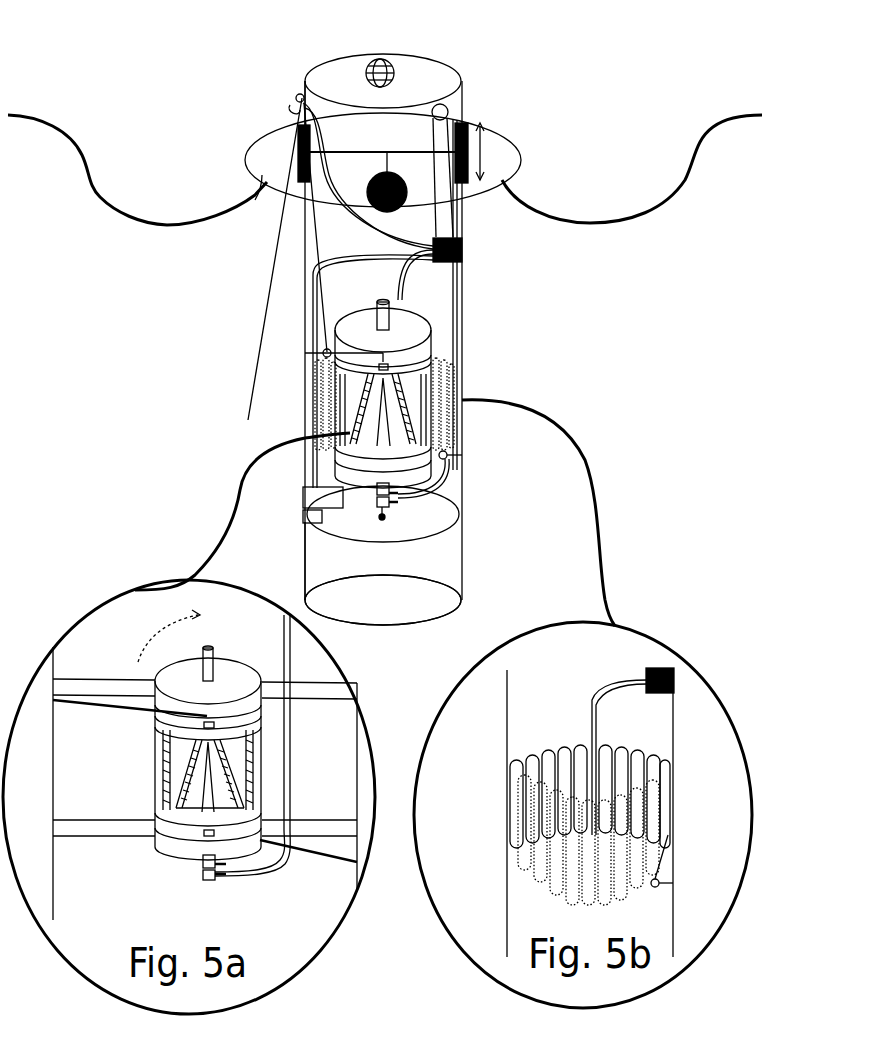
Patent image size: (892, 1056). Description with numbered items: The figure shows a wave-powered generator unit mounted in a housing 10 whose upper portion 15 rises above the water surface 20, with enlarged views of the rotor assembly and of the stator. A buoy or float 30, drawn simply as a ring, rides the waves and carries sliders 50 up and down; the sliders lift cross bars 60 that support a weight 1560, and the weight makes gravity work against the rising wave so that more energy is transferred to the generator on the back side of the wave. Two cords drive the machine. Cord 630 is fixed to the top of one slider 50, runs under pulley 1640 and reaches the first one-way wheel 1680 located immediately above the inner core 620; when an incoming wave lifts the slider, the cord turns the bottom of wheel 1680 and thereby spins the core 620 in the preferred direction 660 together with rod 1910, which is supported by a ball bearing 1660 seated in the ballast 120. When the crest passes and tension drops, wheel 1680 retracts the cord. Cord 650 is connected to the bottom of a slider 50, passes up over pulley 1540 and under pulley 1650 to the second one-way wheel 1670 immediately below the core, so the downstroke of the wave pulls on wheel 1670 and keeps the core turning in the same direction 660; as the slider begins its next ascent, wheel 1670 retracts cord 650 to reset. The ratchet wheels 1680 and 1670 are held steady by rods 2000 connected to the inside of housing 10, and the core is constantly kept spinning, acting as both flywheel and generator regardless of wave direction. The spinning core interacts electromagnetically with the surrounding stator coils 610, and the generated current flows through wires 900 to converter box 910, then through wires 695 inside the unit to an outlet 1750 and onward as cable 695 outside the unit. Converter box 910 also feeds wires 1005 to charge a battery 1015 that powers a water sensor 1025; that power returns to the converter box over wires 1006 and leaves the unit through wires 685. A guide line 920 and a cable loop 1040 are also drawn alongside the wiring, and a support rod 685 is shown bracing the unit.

In FIG. 5, the housing 10 is at (462, 310).
In FIG. 5A, the housing 10 is at (53, 752).
In FIG. 5, the upper tube section 15 is at (425, 80).
In FIG. 5, the water surface 20 is at (580, 222).
In FIG. 5, the buoy or float 30 is at (262, 180).
In FIG. 5, the slider 50 is at (262, 152).
In FIG. 5, the cross bar 60 is at (415, 152).
In FIG. 5, the ballast 120 is at (462, 585).
In FIG. 5, the coils 610 is at (455, 420).
In FIG. 5B, the coils 610 is at (518, 770).
In FIG. 5, the inner core 620 is at (335, 430).
In FIG. 5A, the inner core 620 is at (240, 735).
In FIG. 5, the cord 630 is at (322, 345).
In FIG. 5A, the cord 630 is at (140, 718).
In FIG. 5, the cord 650 is at (462, 240).
In FIG. 5A, the cord 650 is at (300, 855).
In FIG. 5A, the preferred direction 660 is at (158, 640).
In FIG. 5, the wires 685 is at (278, 220).
In FIG. 5, the wires / cable 695 is at (298, 100).
In FIG. 5, the wires 900 is at (398, 290).
In FIG. 5B, the wires 900 is at (590, 700).
In FIG. 5, the converter box 910 is at (462, 270).
In FIG. 5, the guide line 920 is at (455, 287).
In FIG. 5, the wires 1005 is at (350, 238).
In FIG. 5, the wires 1006 is at (360, 258).
In FIG. 5, the battery 1015 is at (322, 514).
In FIG. 5, the water sensor 1025 is at (305, 560).
In FIG. 5, the cable loop 1040 is at (450, 490).
In FIG. 5, the pulley 1540 is at (446, 110).
In FIG. 5, the weight 1560 is at (372, 185).
In FIG. 5, the pulley 1640 is at (328, 350).
In FIG. 5, the pulley 1650 is at (447, 456).
In FIG. 5, the ball bearing 1660 is at (382, 515).
In FIG. 5, the second one-way wheel 1670 is at (342, 496).
In FIG. 5A, the second one-way wheel 1670 is at (192, 850).
In FIG. 5, the first one-way wheel 1680 is at (432, 330).
In FIG. 5A, the first one-way wheel 1680 is at (230, 680).
In FIG. 5, the outlet 1750 is at (300, 97).
In FIG. 5, the rod 1910 is at (430, 545).
In FIG. 5A, the rod 1910 is at (210, 650).
In FIG. 5A, the rods 2000 is at (130, 688).